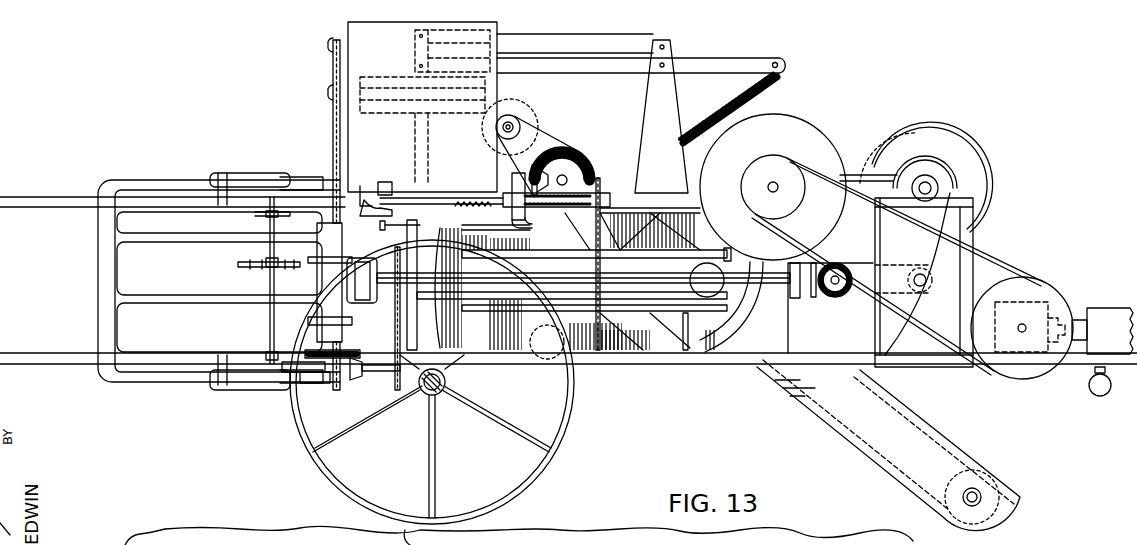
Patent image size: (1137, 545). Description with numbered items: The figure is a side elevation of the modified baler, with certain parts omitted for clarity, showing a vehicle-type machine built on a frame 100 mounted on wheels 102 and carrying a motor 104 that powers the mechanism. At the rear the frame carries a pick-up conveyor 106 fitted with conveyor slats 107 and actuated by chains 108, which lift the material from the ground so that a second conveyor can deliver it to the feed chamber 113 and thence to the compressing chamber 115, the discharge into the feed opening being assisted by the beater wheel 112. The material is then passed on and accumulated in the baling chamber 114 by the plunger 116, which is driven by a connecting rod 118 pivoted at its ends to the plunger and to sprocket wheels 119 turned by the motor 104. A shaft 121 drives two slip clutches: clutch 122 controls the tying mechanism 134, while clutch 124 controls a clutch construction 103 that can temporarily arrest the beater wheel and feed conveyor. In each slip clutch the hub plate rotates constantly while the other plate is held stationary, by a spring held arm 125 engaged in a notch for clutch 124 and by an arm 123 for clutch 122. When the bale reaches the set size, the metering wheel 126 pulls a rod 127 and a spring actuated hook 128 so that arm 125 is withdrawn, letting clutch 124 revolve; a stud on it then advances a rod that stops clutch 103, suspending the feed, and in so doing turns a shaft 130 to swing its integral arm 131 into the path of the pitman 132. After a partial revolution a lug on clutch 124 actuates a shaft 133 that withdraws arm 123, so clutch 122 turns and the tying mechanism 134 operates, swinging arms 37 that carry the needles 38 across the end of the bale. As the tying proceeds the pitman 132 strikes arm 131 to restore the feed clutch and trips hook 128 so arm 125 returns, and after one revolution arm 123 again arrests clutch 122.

The arms 37 is at (142, 183).
The needles 38 is at (165, 266).
The frame 100 is at (57, 360).
The wheels 102 is at (318, 466).
The clutch construction 103 is at (515, 168).
The motor 104 is at (1052, 336).
The pick-up conveyor 106 is at (888, 449).
The conveyor slats 107 is at (910, 414).
The chains 108 is at (543, 119).
The beater wheel 112 is at (372, 77).
The feed chamber 113 is at (422, 131).
The baling chamber 114 is at (219, 327).
The compressing chamber 115 is at (444, 288).
The plunger 116 is at (533, 339).
The connecting rod 118 is at (884, 246).
The sprocket wheels 119 is at (880, 280).
The shaft 121 is at (775, 292).
The slip clutch 122 is at (536, 320).
The arm 123 is at (380, 227).
The slip clutch 124 is at (527, 228).
The spring held arm 125 is at (438, 213).
The metering wheel 126 is at (243, 268).
The rod 127 is at (290, 216).
The spring actuated hook 128 is at (388, 185).
The shaft 130 is at (471, 193).
The integral arm 131 is at (362, 197).
The pitman 132 is at (310, 182).
The shaft 133 is at (496, 240).
The tying mechanism 134 is at (330, 282).